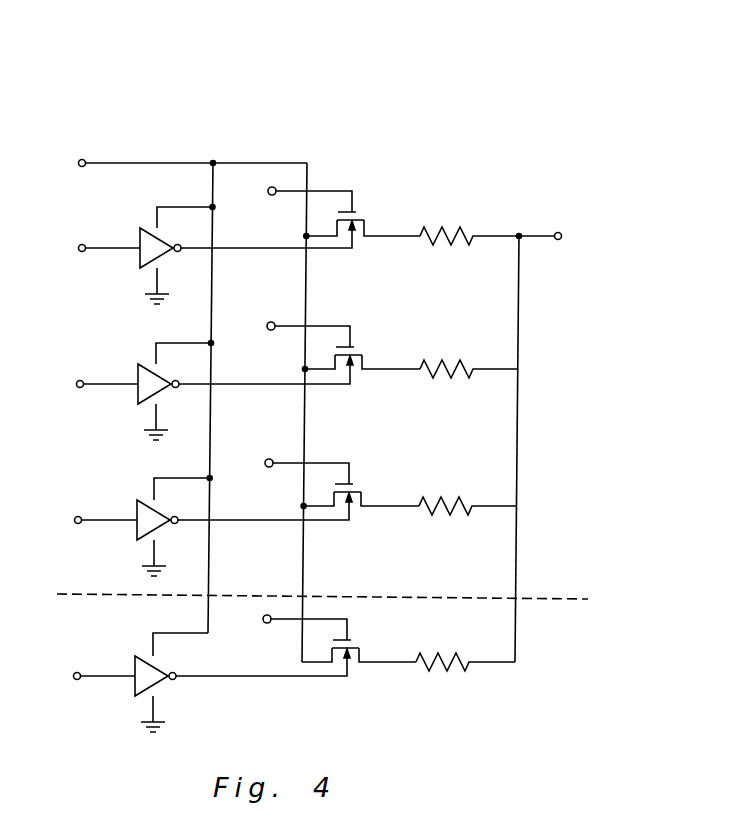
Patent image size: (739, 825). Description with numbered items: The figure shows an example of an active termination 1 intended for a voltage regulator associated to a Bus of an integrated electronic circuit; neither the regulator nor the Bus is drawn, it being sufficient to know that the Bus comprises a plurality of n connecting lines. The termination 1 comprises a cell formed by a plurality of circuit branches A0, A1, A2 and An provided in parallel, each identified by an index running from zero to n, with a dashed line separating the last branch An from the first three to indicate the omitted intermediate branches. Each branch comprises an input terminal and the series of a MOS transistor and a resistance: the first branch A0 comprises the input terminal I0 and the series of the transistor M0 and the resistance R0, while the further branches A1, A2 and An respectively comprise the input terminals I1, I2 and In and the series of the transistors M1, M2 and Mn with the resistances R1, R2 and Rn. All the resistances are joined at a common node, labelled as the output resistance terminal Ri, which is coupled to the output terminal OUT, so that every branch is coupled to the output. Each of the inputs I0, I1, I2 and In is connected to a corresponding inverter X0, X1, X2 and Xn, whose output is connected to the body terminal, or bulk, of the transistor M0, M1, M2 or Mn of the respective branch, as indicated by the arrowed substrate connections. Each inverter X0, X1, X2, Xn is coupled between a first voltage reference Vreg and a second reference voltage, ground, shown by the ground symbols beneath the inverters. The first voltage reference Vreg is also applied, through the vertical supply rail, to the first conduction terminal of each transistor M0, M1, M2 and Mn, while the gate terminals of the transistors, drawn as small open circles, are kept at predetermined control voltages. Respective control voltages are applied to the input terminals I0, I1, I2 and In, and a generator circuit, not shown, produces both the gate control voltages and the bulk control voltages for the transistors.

The active termination 1 is at (503, 100).
The first voltage reference Vreg is at (169, 165).
The output resistance terminal Ri is at (553, 244).
The output terminal OUT is at (558, 240).
The input terminal of first branch I0 is at (95, 249).
The input terminal of second branch I1 is at (93, 385).
The input terminal of third branch I2 is at (91, 521).
The input terminal of n-th branch In is at (90, 677).
The inverter of first branch X0 is at (142, 259).
The inverter of second branch X1 is at (140, 395).
The inverter of third branch X2 is at (139, 531).
The inverter of n-th branch Xn is at (137, 687).
The MOS transistor of first branch M0 is at (344, 213).
The MOS transistor of second branch M1 is at (343, 347).
The MOS transistor of third branch M2 is at (342, 484).
The MOS transistor of n-th branch Mn is at (339, 638).
The resistance of first branch R0 is at (469, 217).
The resistance of second branch R1 is at (469, 350).
The resistance of third branch R2 is at (468, 487).
The resistance of n-th branch Rn is at (465, 643).
The first circuit branch A0 is at (404, 223).
The second circuit branch A1 is at (404, 360).
The third circuit branch A2 is at (404, 497).
The n-th circuit branch An is at (404, 635).